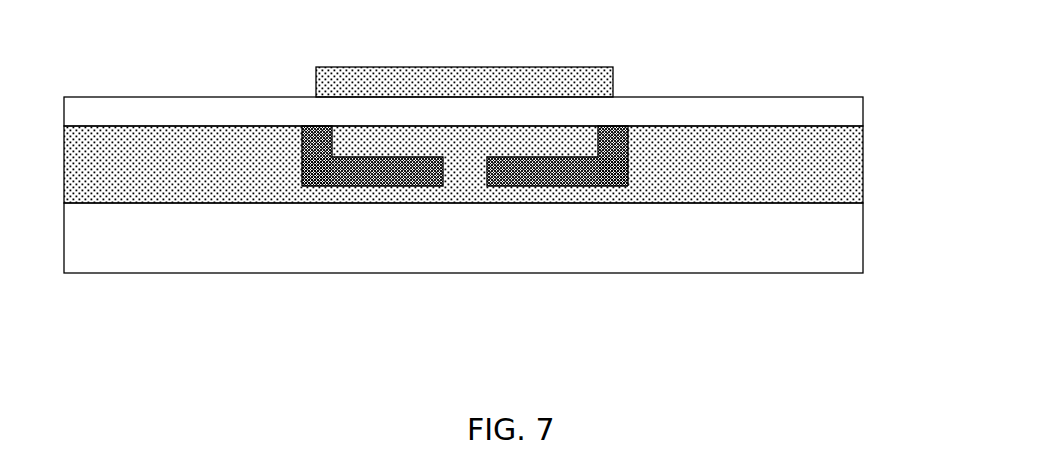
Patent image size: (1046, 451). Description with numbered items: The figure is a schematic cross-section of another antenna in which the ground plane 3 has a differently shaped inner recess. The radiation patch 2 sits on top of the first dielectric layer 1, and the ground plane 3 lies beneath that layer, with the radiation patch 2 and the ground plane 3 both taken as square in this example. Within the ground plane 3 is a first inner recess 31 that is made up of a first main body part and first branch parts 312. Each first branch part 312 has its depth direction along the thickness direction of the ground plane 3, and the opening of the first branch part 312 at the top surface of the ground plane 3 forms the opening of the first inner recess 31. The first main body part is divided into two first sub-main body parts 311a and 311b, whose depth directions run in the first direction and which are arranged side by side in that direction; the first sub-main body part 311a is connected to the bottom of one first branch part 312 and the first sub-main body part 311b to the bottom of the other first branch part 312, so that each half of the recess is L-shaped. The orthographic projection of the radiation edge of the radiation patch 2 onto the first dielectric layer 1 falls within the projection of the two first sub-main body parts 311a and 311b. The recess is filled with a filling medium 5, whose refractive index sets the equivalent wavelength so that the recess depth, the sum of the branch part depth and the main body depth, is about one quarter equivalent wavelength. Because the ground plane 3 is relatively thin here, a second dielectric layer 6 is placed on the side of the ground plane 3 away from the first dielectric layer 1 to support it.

The first dielectric layer 1 is at (843, 108).
The radiation patch 2 is at (558, 88).
The ground plane 3 is at (837, 155).
The filling medium 5 is at (475, 228).
The second dielectric layer 6 is at (842, 229).
The first inner recess 31 is at (475, 263).
The first sub-main body part 311a is at (398, 186).
The first sub-main body part 311b is at (557, 246).
The first branch part 312 is at (313, 186).